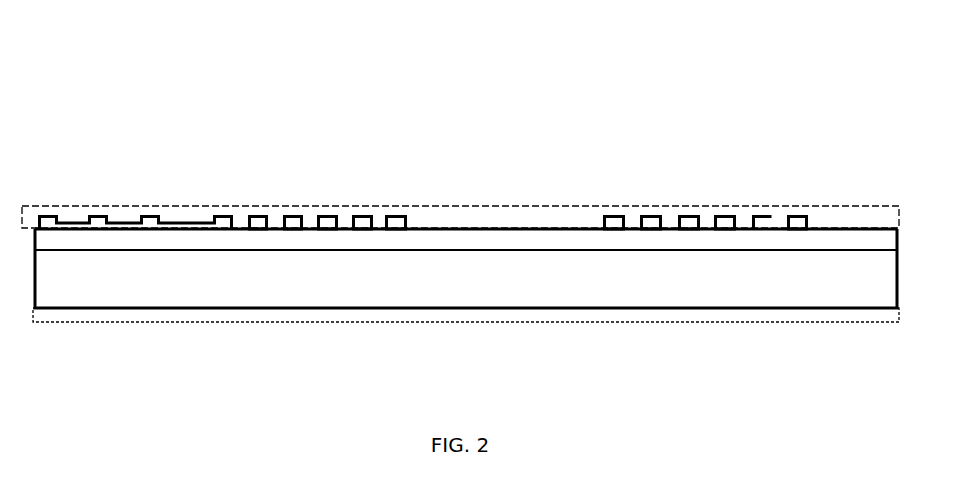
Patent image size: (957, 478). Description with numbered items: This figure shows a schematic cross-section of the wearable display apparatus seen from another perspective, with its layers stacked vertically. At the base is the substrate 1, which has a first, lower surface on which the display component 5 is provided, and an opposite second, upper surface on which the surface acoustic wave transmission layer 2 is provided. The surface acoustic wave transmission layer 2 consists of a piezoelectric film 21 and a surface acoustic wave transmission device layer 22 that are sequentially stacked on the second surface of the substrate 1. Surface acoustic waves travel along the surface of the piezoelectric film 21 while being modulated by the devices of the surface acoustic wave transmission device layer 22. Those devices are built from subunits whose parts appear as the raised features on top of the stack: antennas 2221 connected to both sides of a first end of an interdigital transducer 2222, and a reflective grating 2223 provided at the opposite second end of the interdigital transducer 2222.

The substrate 1 is at (177, 270).
The surface acoustic wave transmission layer 2 is at (457, 153).
The piezoelectric film 21 is at (505, 243).
The surface acoustic wave transmission device layer 22 is at (342, 207).
The antenna 2221 is at (93, 218).
The interdigital transducer 2222 is at (257, 220).
The reflective grating 2223 is at (650, 220).
The display component 5 is at (357, 312).